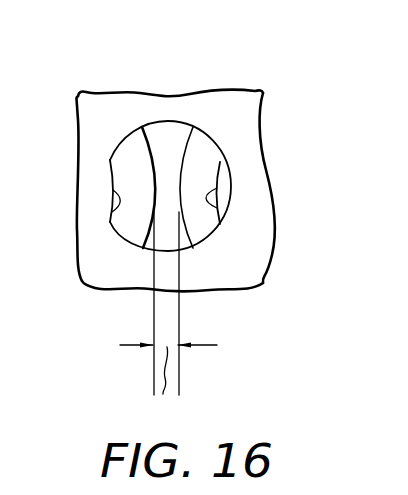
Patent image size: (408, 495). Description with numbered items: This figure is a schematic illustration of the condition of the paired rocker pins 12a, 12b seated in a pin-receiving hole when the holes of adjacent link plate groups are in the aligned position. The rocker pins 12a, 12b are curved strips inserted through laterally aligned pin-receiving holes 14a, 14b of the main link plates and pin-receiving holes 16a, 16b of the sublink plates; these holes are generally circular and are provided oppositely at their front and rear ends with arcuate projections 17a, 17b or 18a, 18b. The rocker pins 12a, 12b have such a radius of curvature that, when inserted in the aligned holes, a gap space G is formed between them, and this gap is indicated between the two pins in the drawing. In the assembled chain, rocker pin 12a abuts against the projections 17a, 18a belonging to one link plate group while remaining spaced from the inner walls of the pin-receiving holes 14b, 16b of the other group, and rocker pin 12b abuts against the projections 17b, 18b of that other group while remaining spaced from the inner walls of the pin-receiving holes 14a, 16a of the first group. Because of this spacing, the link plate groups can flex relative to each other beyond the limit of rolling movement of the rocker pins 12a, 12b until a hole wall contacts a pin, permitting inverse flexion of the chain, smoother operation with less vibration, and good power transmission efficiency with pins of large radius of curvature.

The rocker pin 12a is at (131, 150).
The rocker pin 12b is at (198, 142).
The pin-receiving hole 14a is at (266, 253).
The pin-receiving hole 16a is at (266, 253).
The pin-receiving hole 14b is at (266, 253).
The pin-receiving hole 16b is at (167, 187).
The arcuate projection 17a is at (77, 247).
The arcuate projection 18a is at (120, 212).
The arcuate projection 17b is at (292, 193).
The arcuate projection 18b is at (206, 204).
The gap space G is at (168, 385).